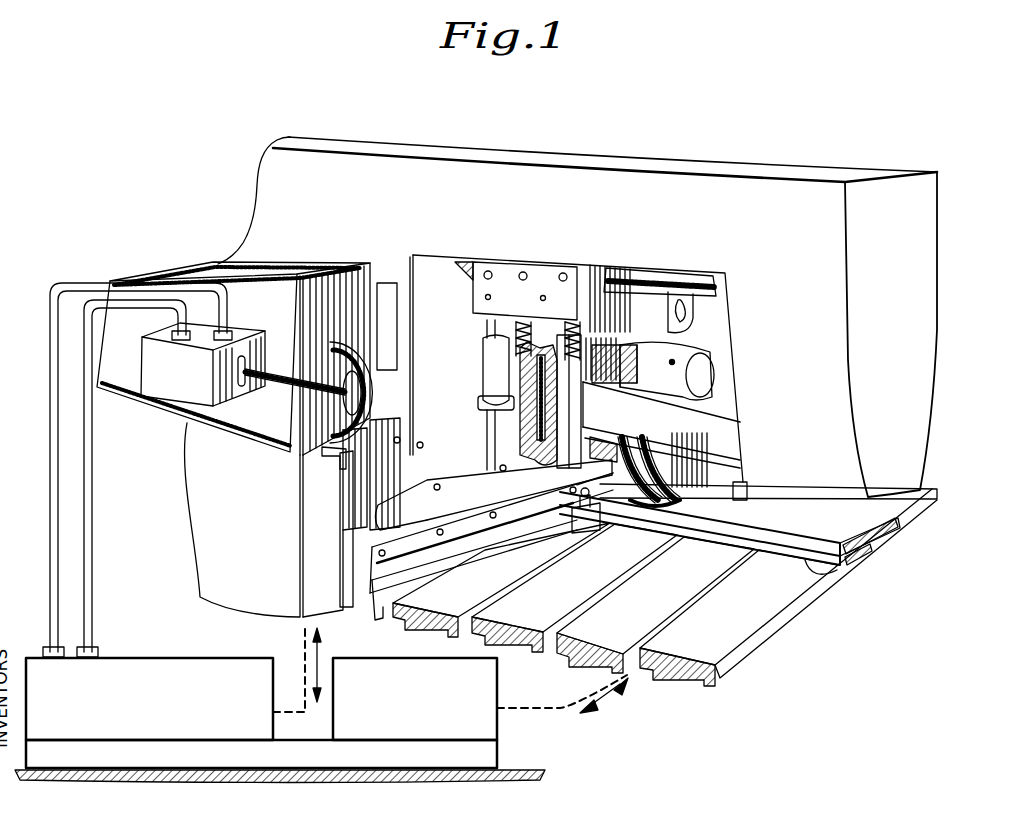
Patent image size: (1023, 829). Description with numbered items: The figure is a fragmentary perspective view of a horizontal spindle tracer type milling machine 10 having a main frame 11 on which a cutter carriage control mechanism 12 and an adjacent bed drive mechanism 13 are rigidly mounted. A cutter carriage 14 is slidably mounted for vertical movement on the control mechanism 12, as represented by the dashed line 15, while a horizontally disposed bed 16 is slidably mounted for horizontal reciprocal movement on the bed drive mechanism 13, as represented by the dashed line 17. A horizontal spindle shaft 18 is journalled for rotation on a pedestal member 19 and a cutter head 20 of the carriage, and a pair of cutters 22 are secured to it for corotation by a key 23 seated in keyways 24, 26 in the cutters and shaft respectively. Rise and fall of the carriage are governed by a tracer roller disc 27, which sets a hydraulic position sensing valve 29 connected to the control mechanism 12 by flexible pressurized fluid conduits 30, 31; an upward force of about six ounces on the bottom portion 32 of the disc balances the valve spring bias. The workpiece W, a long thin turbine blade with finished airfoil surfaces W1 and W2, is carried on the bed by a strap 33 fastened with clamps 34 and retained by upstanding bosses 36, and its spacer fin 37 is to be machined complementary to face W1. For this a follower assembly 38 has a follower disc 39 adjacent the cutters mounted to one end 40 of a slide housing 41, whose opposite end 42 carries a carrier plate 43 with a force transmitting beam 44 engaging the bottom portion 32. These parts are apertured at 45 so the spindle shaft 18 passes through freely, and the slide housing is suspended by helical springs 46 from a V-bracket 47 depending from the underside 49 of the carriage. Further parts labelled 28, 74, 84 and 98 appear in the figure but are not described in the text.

The tracer type milling machine 10 is at (812, 620).
The main frame 11 is at (503, 748).
The cutter carriage control mechanism 12 is at (150, 637).
The bed drive mechanism 13 is at (380, 657).
The cutter carriage 14 is at (226, 246).
The dashed line 15 is at (303, 657).
The bed 16 is at (760, 646).
The dashed line 17 is at (580, 691).
The spindle shaft 18 is at (715, 412).
The pedestal member 19 is at (255, 199).
The cutter head 20 is at (938, 328).
The cutters 22 is at (673, 363).
The key 23 is at (718, 405).
The keyway 24 is at (679, 423).
The keyway 26 is at (695, 423).
The tracer roller disc 27 is at (343, 340).
The shaft 28 is at (276, 370).
The hydraulic position sensing valve 29 is at (210, 410).
The flexible pressurized fluid conduit 30 is at (50, 468).
The flexible pressurized fluid conduit 31 is at (93, 476).
The bottom portion of tracer disc 32 is at (344, 465).
The strap 33 is at (817, 565).
The clamps 34 is at (590, 531).
The upstanding bosses 36 is at (573, 477).
The spacer fin 37 is at (663, 503).
The follower assembly 38 is at (487, 468).
The follower disc 39 is at (610, 298).
The one end of slide housing 40 is at (550, 403).
The slide housing 41 is at (483, 417).
The opposite end of slide housing 42 is at (483, 378).
The carrier plate 43 is at (397, 512).
The force transmitting beam 44 is at (350, 492).
The aperture 45 is at (600, 437).
The helical springs 46 is at (585, 401).
The V-bracket 47 is at (570, 253).
The underside of cutter carriage 49 is at (641, 272).
The spring 74 is at (558, 327).
The latch 84 is at (663, 300).
The spring 98 is at (508, 323).
The workpiece W is at (900, 523).
The airfoil surface W1 is at (896, 535).
The airfoil surface W2 is at (873, 553).